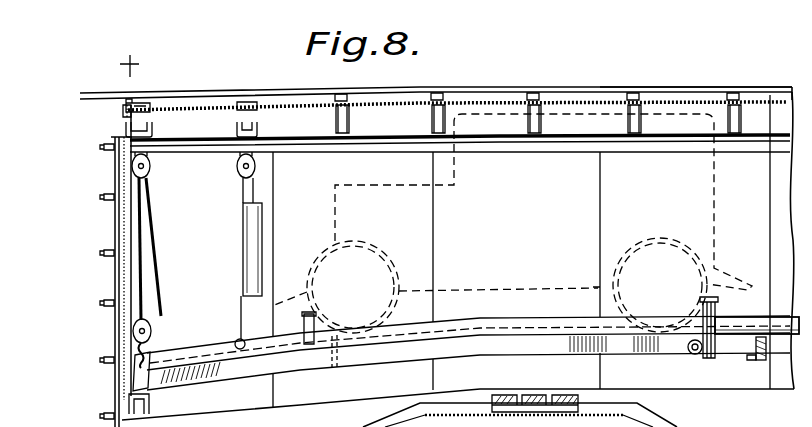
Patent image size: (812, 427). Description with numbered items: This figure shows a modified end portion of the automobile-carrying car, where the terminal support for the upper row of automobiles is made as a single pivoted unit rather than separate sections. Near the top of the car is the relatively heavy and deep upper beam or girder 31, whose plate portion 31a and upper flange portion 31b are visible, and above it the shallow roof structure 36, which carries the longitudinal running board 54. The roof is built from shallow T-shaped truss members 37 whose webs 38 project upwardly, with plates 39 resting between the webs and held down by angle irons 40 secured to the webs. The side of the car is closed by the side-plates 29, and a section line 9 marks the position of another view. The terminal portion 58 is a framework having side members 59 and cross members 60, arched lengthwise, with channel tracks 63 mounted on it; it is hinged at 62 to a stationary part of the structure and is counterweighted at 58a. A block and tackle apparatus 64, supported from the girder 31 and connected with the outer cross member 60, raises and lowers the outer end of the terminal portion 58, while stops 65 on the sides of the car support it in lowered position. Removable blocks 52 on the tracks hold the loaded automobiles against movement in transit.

The section line 9 is at (129, 54).
The side-plates 29 is at (600, 197).
The upper beam or girder 31 is at (150, 130).
The plate portion 31a is at (122, 124).
The upper flange portion 31b is at (140, 108).
The roof structure 36 is at (483, 100).
The truss members 37 is at (343, 127).
The webs 38 is at (328, 93).
The plates 39 is at (273, 101).
The angle irons 40 is at (543, 100).
The blocks 52 is at (317, 323).
The longitudinal running board 54 is at (670, 88).
The terminal portion 58 is at (491, 327).
The counterweight 58a is at (242, 257).
The side members 59 is at (484, 348).
The cross members 60 is at (525, 348).
The hinge 62 is at (709, 356).
The tracks 63 is at (549, 320).
The block and tackle apparatus 64 is at (157, 240).
The stops 65 is at (152, 406).